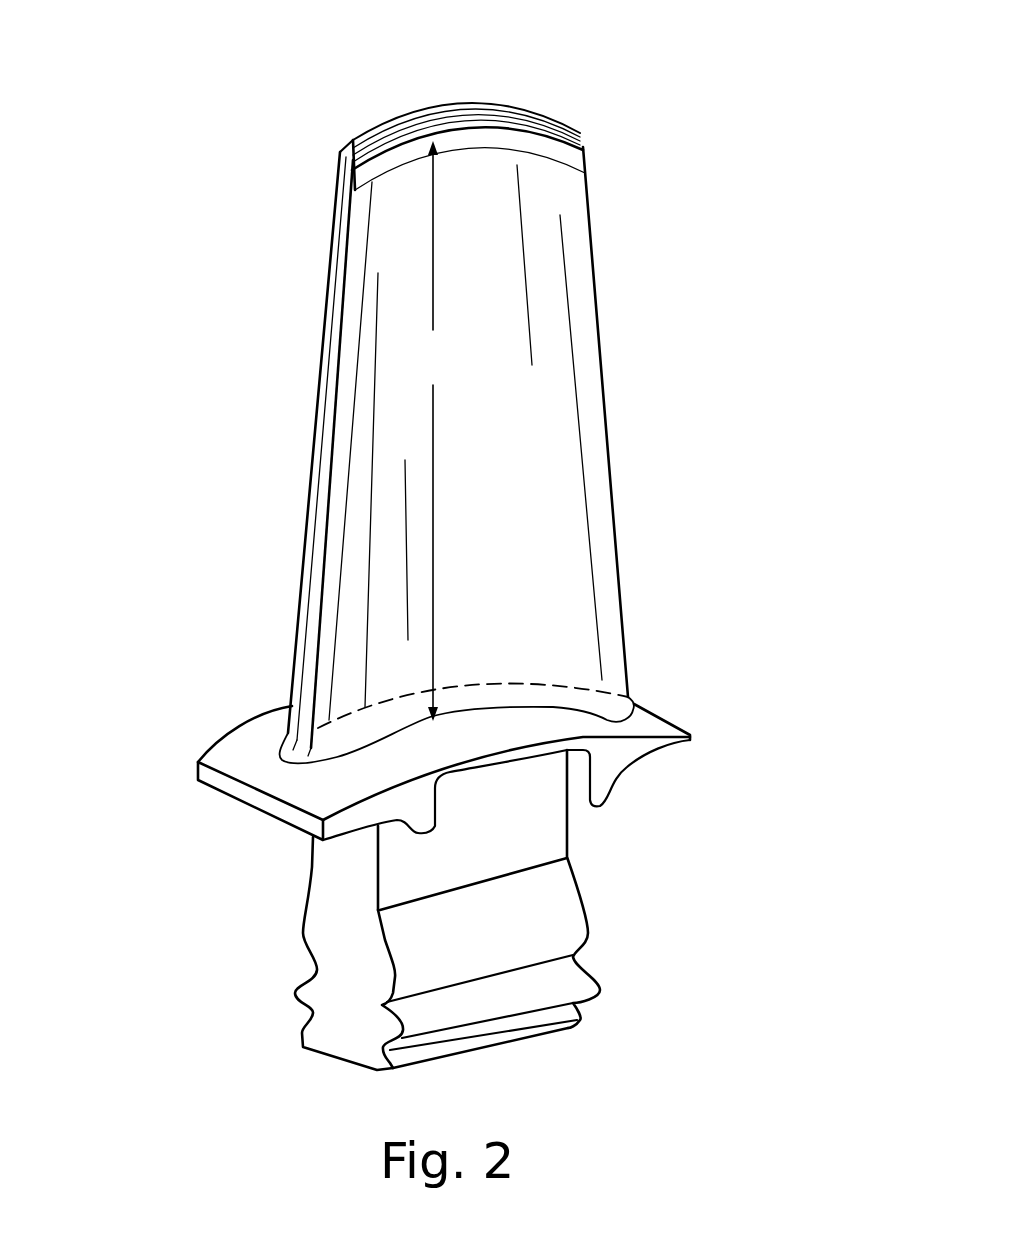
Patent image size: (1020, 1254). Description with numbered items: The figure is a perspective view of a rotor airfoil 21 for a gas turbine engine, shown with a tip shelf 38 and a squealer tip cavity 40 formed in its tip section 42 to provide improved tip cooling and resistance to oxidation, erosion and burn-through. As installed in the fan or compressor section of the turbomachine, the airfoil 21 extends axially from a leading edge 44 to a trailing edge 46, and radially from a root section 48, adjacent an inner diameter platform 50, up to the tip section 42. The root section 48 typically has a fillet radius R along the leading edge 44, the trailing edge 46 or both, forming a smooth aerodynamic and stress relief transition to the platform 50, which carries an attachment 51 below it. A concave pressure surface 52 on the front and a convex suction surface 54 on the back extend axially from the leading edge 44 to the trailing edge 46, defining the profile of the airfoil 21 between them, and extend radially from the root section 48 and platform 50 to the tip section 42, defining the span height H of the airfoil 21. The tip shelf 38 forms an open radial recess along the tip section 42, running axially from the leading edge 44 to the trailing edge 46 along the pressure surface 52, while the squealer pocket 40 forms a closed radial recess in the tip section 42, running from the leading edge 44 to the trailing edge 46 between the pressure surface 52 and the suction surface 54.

The rotor airfoil 21 is at (183, 168).
The tip shelf 38 is at (562, 143).
The squealer tip cavity 40 is at (352, 143).
The tip section 42 is at (606, 128).
The leading edge 44 is at (314, 433).
The trailing edge 46 is at (600, 462).
The root section 48 is at (580, 700).
The inner diameter platform 50 is at (653, 720).
The attachment 51 is at (550, 898).
The pressure surface 52 is at (465, 434).
The suction surface 54 is at (303, 328).